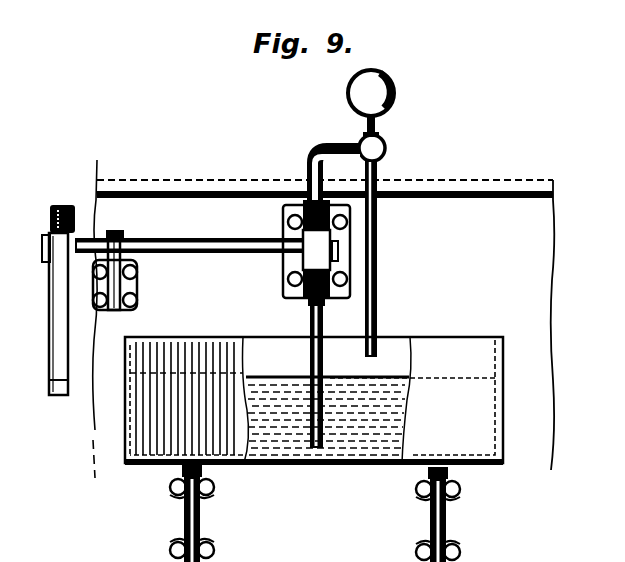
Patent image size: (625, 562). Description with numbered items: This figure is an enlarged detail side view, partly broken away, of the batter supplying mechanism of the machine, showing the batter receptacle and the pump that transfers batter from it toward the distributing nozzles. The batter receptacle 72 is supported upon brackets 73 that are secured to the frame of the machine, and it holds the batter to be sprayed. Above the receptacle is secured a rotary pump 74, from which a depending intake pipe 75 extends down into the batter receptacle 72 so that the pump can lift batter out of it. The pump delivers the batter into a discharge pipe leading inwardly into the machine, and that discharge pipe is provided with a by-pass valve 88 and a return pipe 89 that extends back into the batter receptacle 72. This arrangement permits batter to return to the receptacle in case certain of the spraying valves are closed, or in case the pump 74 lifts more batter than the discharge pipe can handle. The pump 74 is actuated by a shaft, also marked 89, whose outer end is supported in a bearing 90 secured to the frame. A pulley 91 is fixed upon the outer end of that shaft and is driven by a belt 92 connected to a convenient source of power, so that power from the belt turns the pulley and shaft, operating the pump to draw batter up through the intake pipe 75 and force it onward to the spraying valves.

The batter receptacle 72 is at (314, 401).
The brackets 73 is at (205, 518).
The rotary pump 74 is at (300, 249).
The intake pipe 75 is at (308, 326).
The by-pass valve 88 is at (381, 115).
The return pipe 89 is at (244, 254).
The bearing 90 is at (137, 290).
The pulley 91 is at (50, 219).
The belt 92 is at (49, 353).